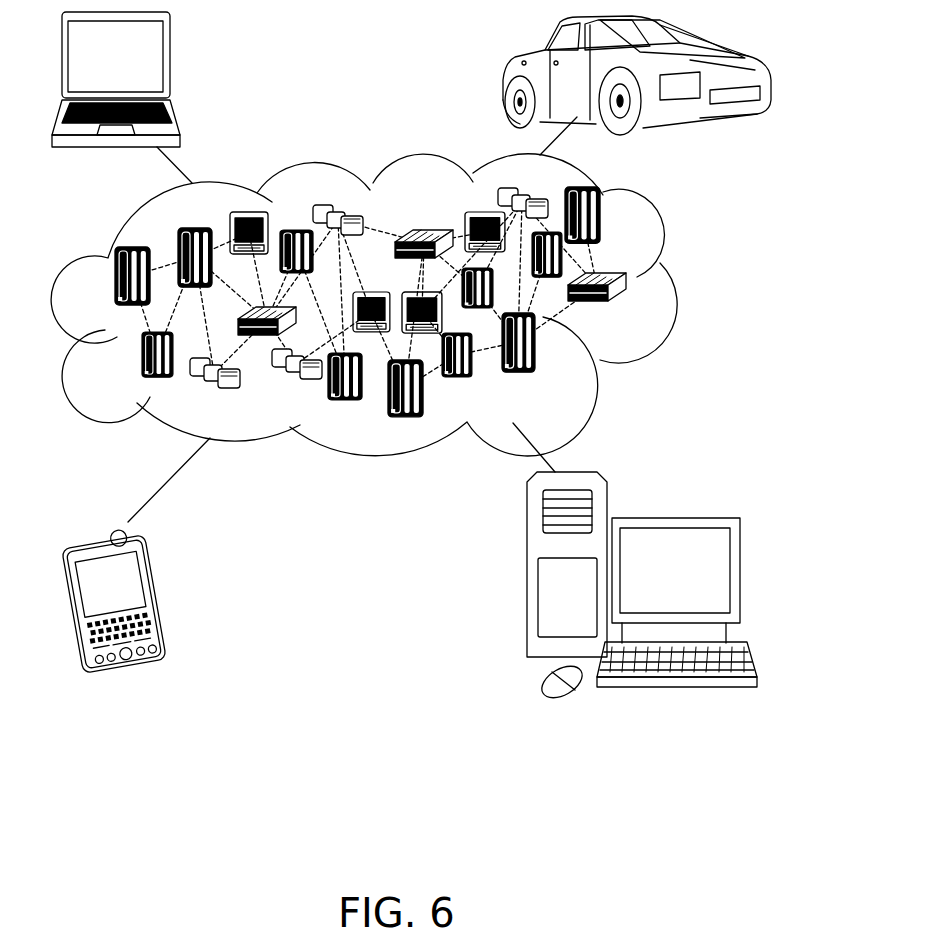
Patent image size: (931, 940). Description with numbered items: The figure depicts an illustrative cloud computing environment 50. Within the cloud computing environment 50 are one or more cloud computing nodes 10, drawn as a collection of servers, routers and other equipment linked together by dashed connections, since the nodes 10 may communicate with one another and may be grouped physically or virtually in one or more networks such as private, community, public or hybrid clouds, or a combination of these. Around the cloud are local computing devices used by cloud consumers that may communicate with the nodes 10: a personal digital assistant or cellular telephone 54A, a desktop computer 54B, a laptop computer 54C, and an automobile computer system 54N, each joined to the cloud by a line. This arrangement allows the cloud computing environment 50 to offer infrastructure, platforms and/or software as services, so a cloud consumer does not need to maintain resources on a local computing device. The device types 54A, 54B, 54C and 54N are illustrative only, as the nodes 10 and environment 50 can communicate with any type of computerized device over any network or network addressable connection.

The cloud computing node 10 is at (633, 311).
The cloud computing environment 50 is at (673, 286).
The personal digital assistant or cellular telephone 54A is at (160, 594).
The desktop computer 54B is at (672, 517).
The laptop computer 54C is at (175, 62).
The automobile computer system 54N is at (503, 78).